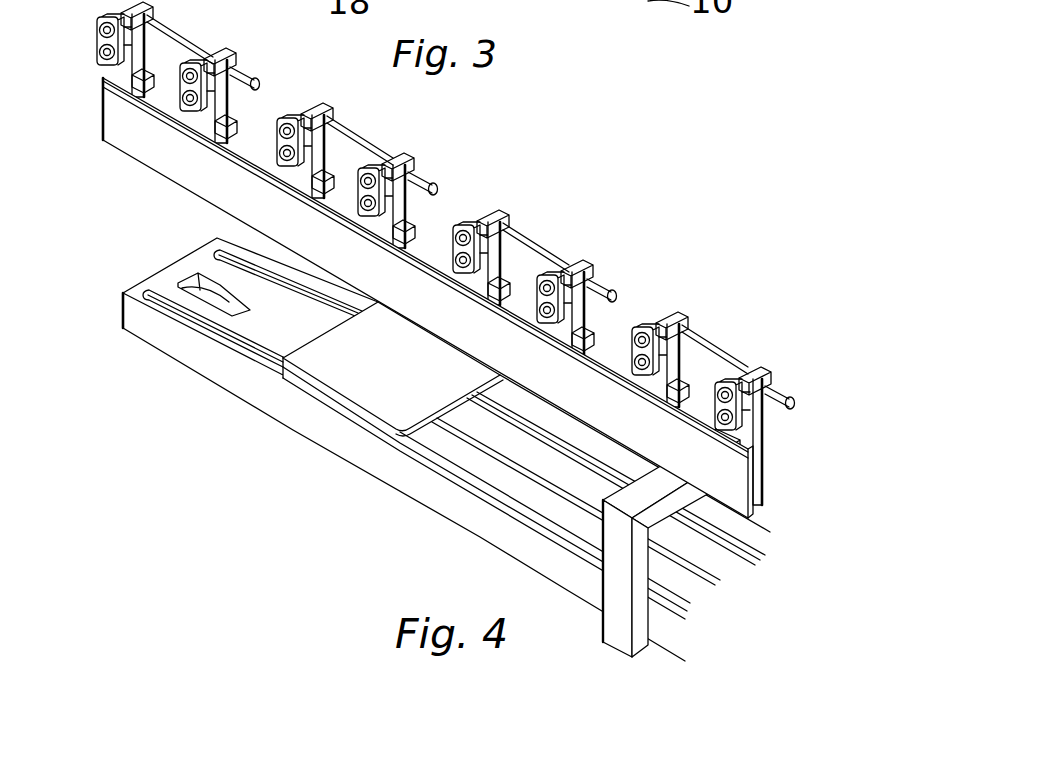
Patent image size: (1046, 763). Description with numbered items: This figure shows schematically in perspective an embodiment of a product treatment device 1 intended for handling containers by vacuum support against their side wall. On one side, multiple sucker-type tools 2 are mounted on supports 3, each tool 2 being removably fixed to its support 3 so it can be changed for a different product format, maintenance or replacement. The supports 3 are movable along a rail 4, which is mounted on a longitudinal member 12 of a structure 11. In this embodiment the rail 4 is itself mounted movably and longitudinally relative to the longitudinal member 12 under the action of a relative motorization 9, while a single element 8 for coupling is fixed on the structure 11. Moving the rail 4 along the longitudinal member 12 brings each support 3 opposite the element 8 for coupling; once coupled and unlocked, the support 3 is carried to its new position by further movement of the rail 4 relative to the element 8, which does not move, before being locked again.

The product treatment device 1 is at (450, 260).
The tool 2 is at (743, 418).
The support 3 is at (663, 325).
The rail 4 is at (543, 253).
The element for coupling 8 is at (760, 437).
The relative motorization 9 is at (250, 312).
The structure 11 is at (360, 443).
The longitudinal member 12 is at (150, 138).